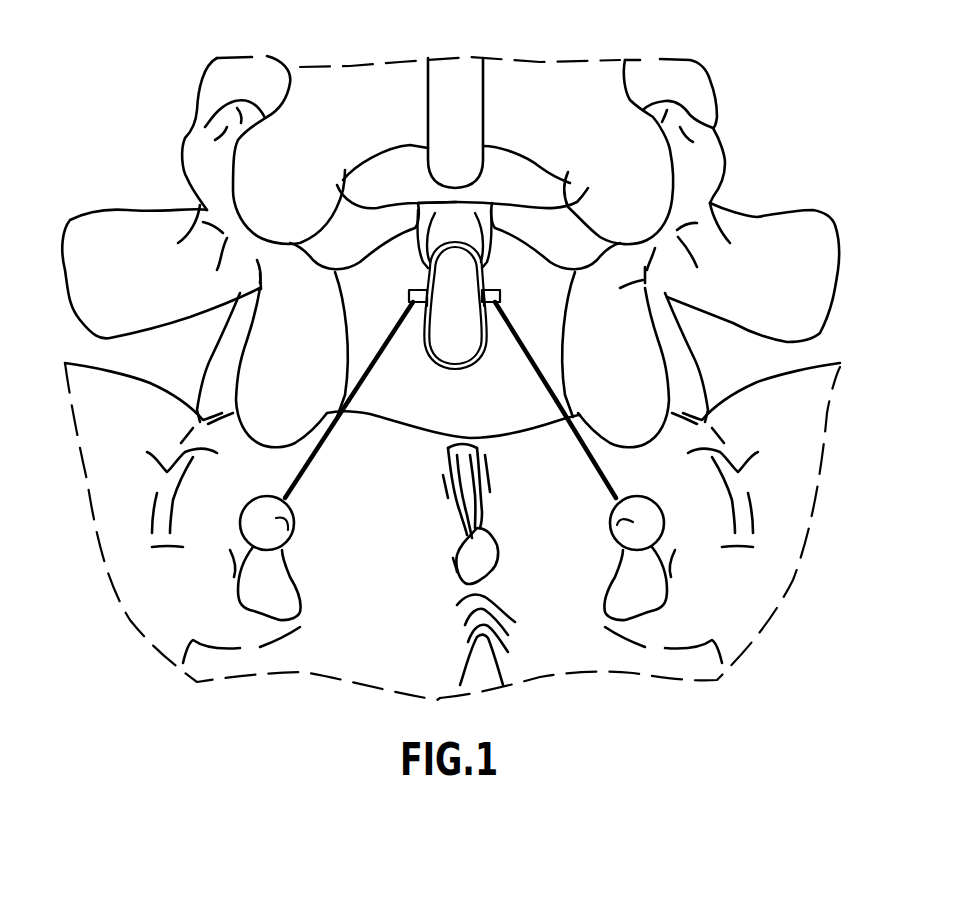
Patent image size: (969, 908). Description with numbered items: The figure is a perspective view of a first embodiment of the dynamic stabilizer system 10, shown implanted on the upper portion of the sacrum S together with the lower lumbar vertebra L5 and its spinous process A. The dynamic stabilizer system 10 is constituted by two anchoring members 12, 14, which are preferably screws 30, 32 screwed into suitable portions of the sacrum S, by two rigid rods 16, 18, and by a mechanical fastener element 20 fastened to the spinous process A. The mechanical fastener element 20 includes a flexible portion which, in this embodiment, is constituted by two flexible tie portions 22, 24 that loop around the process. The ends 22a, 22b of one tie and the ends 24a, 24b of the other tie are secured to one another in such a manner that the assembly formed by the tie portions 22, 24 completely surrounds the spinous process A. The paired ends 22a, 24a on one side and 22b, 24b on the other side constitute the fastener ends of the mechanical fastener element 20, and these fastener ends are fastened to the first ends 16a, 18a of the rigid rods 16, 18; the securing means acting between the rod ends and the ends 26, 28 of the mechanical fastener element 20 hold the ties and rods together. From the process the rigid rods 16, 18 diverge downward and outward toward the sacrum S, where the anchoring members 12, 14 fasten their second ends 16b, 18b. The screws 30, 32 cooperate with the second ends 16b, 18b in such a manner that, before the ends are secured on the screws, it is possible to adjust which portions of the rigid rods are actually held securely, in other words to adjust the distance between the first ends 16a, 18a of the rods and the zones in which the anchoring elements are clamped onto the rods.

The dynamic stabilizer system 10 is at (153, 358).
The anchoring member 12 is at (293, 533).
The anchoring member 14 is at (611, 533).
The rigid rod 16 is at (579, 403).
The first end of rigid rod 16a is at (500, 310).
The second end of rigid rod 16b is at (583, 452).
The rigid rod 18 is at (332, 403).
The first end of rigid rod 18a is at (411, 310).
The second end of rigid rod 18b is at (285, 498).
The mechanical fastener element 20 is at (492, 203).
The flexible tie portion 22 is at (459, 329).
The end of tie portion 22a is at (413, 300).
The end of tie portion 22b is at (500, 303).
The flexible tie portion 24 is at (417, 204).
The end of tie portion 24a is at (420, 290).
The end of tie portion 24b is at (490, 290).
The end of mechanical fastener element 26 is at (409, 293).
The end of mechanical fastener element 28 is at (500, 293).
The screw 30 is at (243, 511).
The screw 32 is at (661, 511).
The spinous process A is at (452, 278).
The lower lumbar vertebra L5 is at (668, 285).
The sacrum S is at (130, 594).